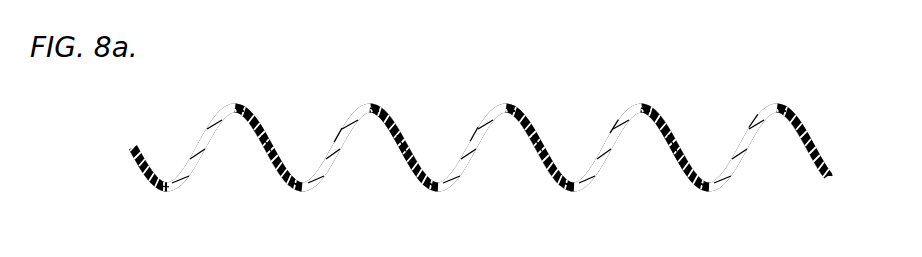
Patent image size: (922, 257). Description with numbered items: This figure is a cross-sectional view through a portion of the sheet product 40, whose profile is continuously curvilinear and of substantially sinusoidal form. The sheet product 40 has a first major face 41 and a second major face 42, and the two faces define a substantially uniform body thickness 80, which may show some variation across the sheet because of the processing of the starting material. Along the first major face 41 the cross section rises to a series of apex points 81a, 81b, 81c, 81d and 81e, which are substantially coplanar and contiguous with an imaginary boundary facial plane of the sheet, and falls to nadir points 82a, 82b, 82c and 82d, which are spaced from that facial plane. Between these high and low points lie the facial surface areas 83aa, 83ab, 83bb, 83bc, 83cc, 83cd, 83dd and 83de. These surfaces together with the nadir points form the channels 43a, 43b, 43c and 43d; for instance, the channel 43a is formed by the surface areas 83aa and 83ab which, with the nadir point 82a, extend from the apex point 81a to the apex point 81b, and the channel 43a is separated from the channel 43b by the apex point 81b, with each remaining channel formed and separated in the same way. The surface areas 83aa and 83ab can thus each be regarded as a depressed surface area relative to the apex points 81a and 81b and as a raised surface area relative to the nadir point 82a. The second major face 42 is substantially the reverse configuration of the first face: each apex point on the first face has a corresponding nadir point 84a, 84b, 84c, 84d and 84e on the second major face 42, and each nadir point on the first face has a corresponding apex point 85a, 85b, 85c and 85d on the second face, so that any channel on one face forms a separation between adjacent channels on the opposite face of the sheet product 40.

The sheet product 40 is at (660, 179).
The first major face 41 is at (525, 98).
The second major face 42 is at (536, 186).
The channel 43a is at (320, 133).
The channel 43b is at (452, 132).
The channel 43c is at (587, 135).
The channel 43d is at (725, 135).
The body thickness 80 is at (167, 175).
The apex point 81a is at (234, 97).
The apex point 81b is at (372, 97).
The apex point 81c is at (506, 96).
The apex point 81d is at (641, 98).
The apex point 81e is at (779, 105).
The nadir point 82a is at (301, 175).
The nadir point 82b is at (437, 175).
The nadir point 82c is at (573, 175).
The nadir point 82d is at (708, 175).
The facial surface area 83aa is at (268, 134).
The facial surface area 83ab is at (342, 127).
The facial surface area 83bb is at (397, 133).
The facial surface area 83bc is at (478, 127).
The facial surface area 83cc is at (538, 123).
The facial surface area 83cd is at (618, 120).
The facial surface area 83dd is at (668, 117).
The facial surface area 83de is at (757, 118).
The nadir point 84a is at (237, 108).
The nadir point 84b is at (375, 108).
The nadir point 84c is at (508, 108).
The nadir point 84d is at (647, 110).
The nadir point 84e is at (778, 110).
The apex point 85a is at (301, 195).
The apex point 85b is at (437, 195).
The apex point 85c is at (573, 197).
The apex point 85d is at (709, 197).